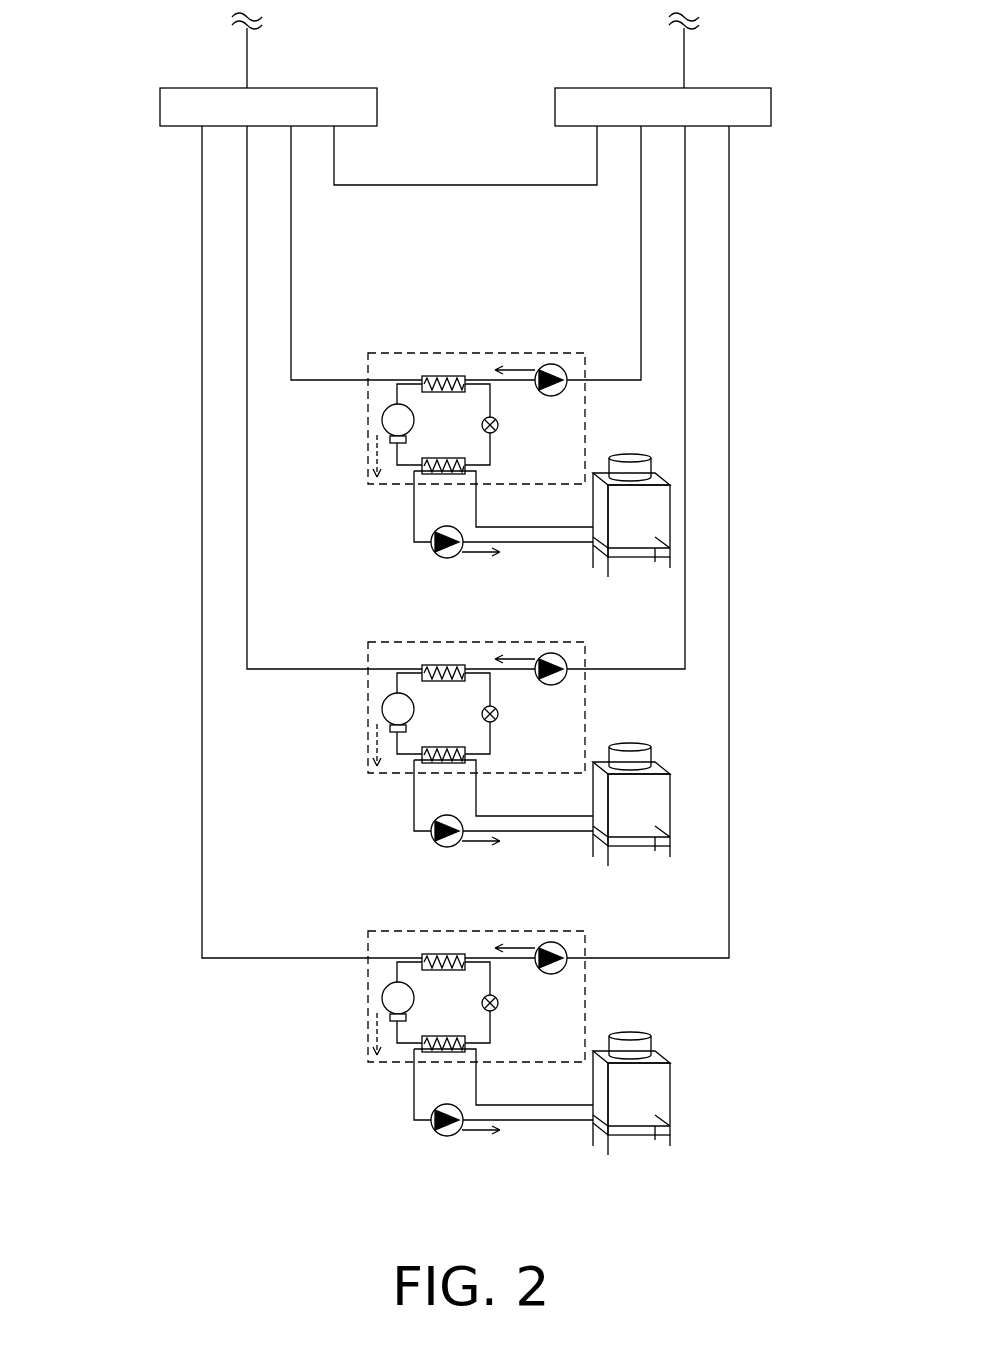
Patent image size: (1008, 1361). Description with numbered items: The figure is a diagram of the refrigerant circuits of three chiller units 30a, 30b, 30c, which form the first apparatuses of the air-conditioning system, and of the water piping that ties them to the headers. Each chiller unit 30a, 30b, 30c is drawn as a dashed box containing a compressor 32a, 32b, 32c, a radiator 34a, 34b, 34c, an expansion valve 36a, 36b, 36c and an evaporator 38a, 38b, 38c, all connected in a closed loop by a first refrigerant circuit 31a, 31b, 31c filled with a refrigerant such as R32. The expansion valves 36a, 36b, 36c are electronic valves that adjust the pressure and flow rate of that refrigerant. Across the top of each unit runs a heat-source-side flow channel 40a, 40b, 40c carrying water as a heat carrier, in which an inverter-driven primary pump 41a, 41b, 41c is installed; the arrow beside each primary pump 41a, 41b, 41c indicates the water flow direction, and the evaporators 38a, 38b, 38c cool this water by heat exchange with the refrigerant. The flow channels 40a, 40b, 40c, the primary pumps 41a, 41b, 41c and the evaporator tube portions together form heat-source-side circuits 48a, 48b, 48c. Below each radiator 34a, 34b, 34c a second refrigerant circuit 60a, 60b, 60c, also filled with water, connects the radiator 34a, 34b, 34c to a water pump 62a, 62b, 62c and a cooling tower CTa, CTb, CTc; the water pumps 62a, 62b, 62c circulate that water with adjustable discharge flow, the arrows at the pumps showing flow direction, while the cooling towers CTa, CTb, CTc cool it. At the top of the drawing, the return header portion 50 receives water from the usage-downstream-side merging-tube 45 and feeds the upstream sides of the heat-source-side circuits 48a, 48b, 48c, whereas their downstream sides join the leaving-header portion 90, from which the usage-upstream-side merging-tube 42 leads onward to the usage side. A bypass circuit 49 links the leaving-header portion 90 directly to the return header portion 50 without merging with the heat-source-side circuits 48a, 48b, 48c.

The leaving-header portion 90 is at (160, 103).
The usage-upstream-side merging-tube 42 is at (249, 70).
The usage-downstream-side merging-tube 45 is at (686, 70).
The bypass circuit 49 is at (580, 184).
The return header portion 50 is at (771, 107).
The heat-source-side flow channel 40a is at (340, 378).
The heat-source-side flow channel 40b is at (333, 379).
The heat-source-side flow channel 40c is at (333, 379).
The chiller unit 30a is at (495, 352).
The chiller unit 30b is at (483, 678).
The chiller unit 30c is at (481, 967).
The first refrigerant circuit 31a is at (394, 393).
The first refrigerant circuit 31b is at (418, 682).
The first refrigerant circuit 31c is at (418, 971).
The compressor 32a is at (383, 419).
The compressor 32b is at (353, 729).
The compressor 32c is at (353, 1018).
The radiator 34a is at (458, 462).
The radiator 34b is at (498, 739).
The radiator 34c is at (497, 1028).
The expansion valve 36a is at (497, 426).
The expansion valve 36b is at (528, 703).
The expansion valve 36c is at (527, 992).
The evaporator 38a is at (443, 376).
The evaporator 38b is at (448, 645).
The evaporator 38c is at (447, 934).
The primary pump 41a is at (549, 366).
The primary pump 41b is at (604, 634).
The primary pump 41c is at (602, 923).
The heat-source-side circuit 48a is at (318, 385).
The heat-source-side circuit 48b is at (318, 385).
The heat-source-side circuit 48c is at (318, 385).
The second refrigerant circuit 60a is at (413, 522).
The second refrigerant circuit 60b is at (452, 832).
The second refrigerant circuit 60c is at (452, 1121).
The water pump 62a is at (460, 556).
The water pump 62b is at (478, 860).
The water pump 62c is at (476, 1149).
The cooling tower CTa is at (628, 472).
The cooling tower CTb is at (637, 778).
The cooling tower CTc is at (633, 1067).